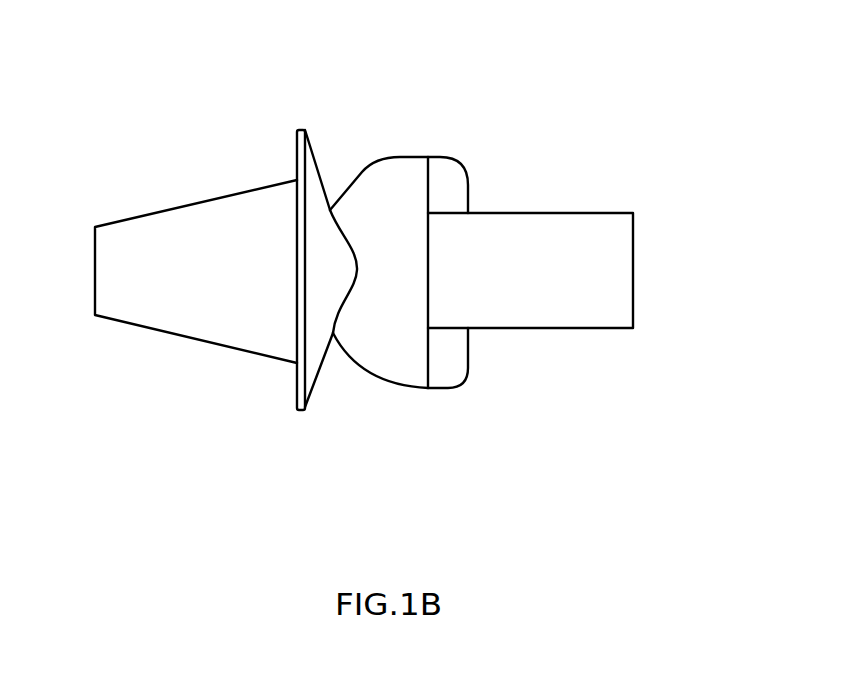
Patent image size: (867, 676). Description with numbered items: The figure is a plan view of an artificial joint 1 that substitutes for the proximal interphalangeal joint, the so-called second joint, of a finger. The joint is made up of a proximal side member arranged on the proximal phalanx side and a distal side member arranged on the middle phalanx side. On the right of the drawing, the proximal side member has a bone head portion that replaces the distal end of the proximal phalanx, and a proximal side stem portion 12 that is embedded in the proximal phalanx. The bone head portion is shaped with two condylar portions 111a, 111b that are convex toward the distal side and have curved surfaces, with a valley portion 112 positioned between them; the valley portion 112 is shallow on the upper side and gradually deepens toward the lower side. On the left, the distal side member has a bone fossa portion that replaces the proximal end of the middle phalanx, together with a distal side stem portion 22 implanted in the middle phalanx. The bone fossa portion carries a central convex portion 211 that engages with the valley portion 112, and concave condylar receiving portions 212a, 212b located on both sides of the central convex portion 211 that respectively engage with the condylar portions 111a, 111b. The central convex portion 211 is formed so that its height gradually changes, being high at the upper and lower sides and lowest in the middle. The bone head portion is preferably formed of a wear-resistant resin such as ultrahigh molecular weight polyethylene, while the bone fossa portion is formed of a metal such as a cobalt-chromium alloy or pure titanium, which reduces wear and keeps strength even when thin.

The artificial joint 1 is at (595, 100).
The proximal side stem portion 12 is at (577, 212).
The distal side stem portion 22 is at (130, 327).
The central convex portion 211 is at (330, 257).
The condylar receiving portion 212a is at (312, 408).
The condylar receiving portion 212b is at (311, 145).
The condylar portion 111a is at (363, 355).
The condylar portion 111b is at (358, 193).
The valley portion 112 is at (352, 295).